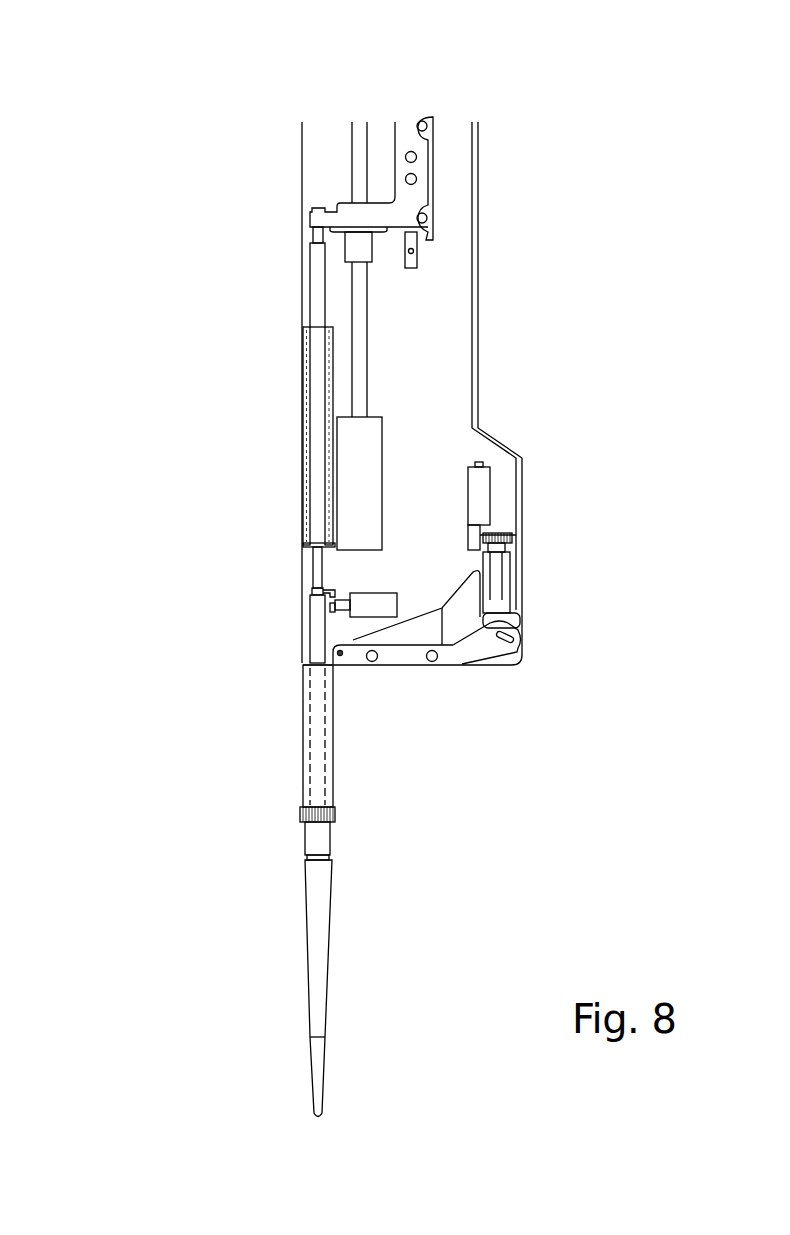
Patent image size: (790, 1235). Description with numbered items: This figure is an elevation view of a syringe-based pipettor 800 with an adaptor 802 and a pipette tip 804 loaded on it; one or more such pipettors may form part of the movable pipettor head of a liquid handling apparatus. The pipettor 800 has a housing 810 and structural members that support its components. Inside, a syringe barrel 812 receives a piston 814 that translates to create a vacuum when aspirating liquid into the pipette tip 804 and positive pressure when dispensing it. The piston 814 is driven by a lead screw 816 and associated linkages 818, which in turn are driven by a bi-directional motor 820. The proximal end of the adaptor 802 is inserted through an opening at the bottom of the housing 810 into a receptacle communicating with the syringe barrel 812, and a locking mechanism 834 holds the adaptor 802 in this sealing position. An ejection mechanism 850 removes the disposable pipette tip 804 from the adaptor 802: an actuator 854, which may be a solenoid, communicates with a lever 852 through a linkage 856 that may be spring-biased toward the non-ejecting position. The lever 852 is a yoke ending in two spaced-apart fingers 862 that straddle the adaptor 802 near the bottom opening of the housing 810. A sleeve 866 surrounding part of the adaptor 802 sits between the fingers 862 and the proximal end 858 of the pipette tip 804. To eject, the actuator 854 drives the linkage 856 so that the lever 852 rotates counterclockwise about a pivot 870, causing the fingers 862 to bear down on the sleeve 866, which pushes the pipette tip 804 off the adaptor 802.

The syringe-based pipettor 800 is at (105, 100).
The adaptor 802 is at (292, 628).
The pipette tip 804 is at (297, 940).
The housing 810 is at (478, 312).
The syringe barrel 812 is at (307, 475).
The piston 814 is at (314, 275).
The lead screw 816 is at (367, 155).
The linkages 818 is at (415, 190).
The bi-directional motor 820 is at (335, 450).
The locking mechanism 834 is at (385, 582).
The ejection mechanism 850 is at (500, 660).
The lever 852 is at (417, 667).
The actuator 854 is at (482, 478).
The linkage 856 is at (498, 572).
The proximal end of the pipette tip 858 is at (300, 818).
The fingers 862 is at (300, 660).
The sleeve 866 is at (300, 743).
The pivot 870 is at (340, 652).